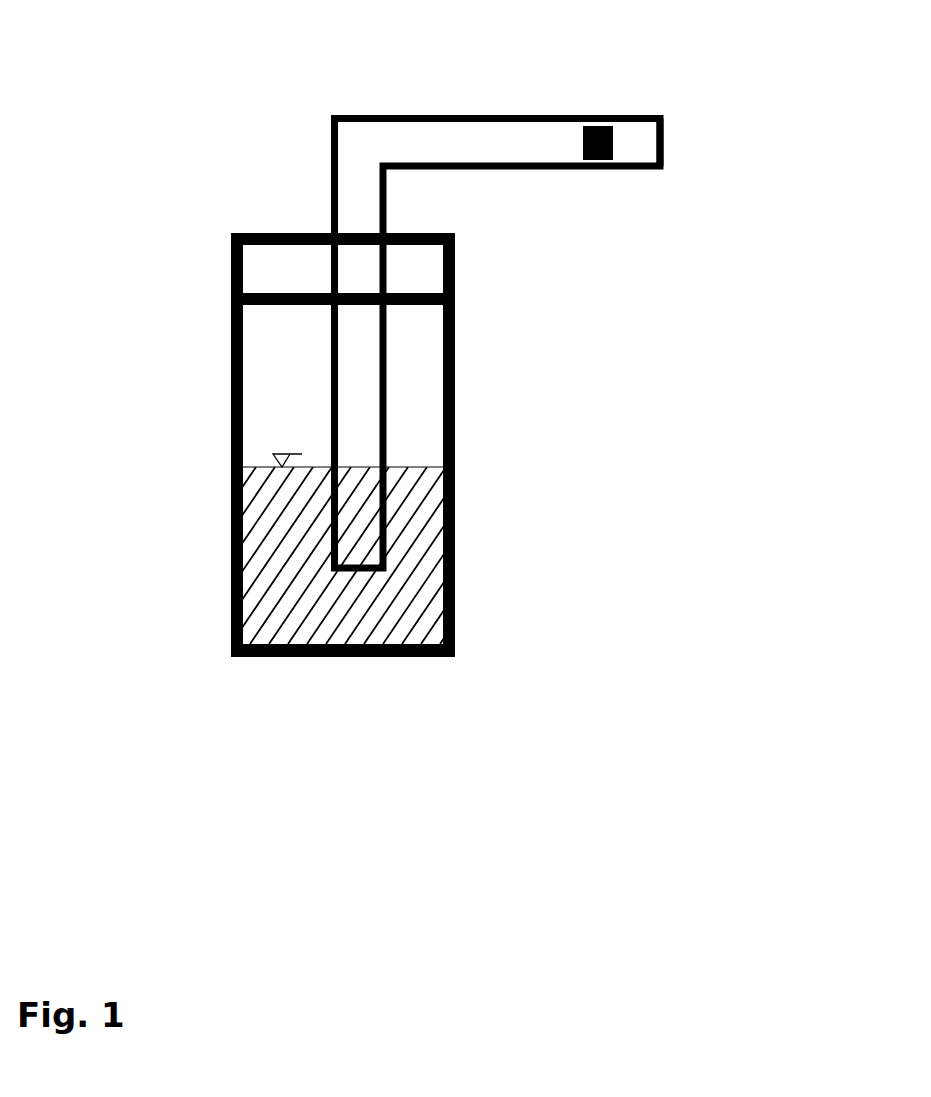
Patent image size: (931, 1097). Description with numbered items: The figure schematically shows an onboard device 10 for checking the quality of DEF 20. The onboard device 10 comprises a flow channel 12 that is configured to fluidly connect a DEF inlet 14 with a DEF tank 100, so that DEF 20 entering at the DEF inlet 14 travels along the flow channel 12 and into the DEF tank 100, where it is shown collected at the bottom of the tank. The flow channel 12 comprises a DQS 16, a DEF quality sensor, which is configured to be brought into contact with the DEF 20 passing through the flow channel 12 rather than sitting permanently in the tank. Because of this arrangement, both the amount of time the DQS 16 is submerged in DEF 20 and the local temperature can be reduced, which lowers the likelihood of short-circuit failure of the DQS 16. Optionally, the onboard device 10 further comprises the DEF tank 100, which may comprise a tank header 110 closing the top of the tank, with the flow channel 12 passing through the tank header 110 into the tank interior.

The onboard device 10 is at (541, 106).
The flow channel 12 is at (497, 149).
The DEF inlet 14 is at (663, 145).
The DQS 16 is at (600, 151).
The DEF 20 is at (410, 593).
The DEF tank 100 is at (252, 425).
The tank header 110 is at (257, 278).